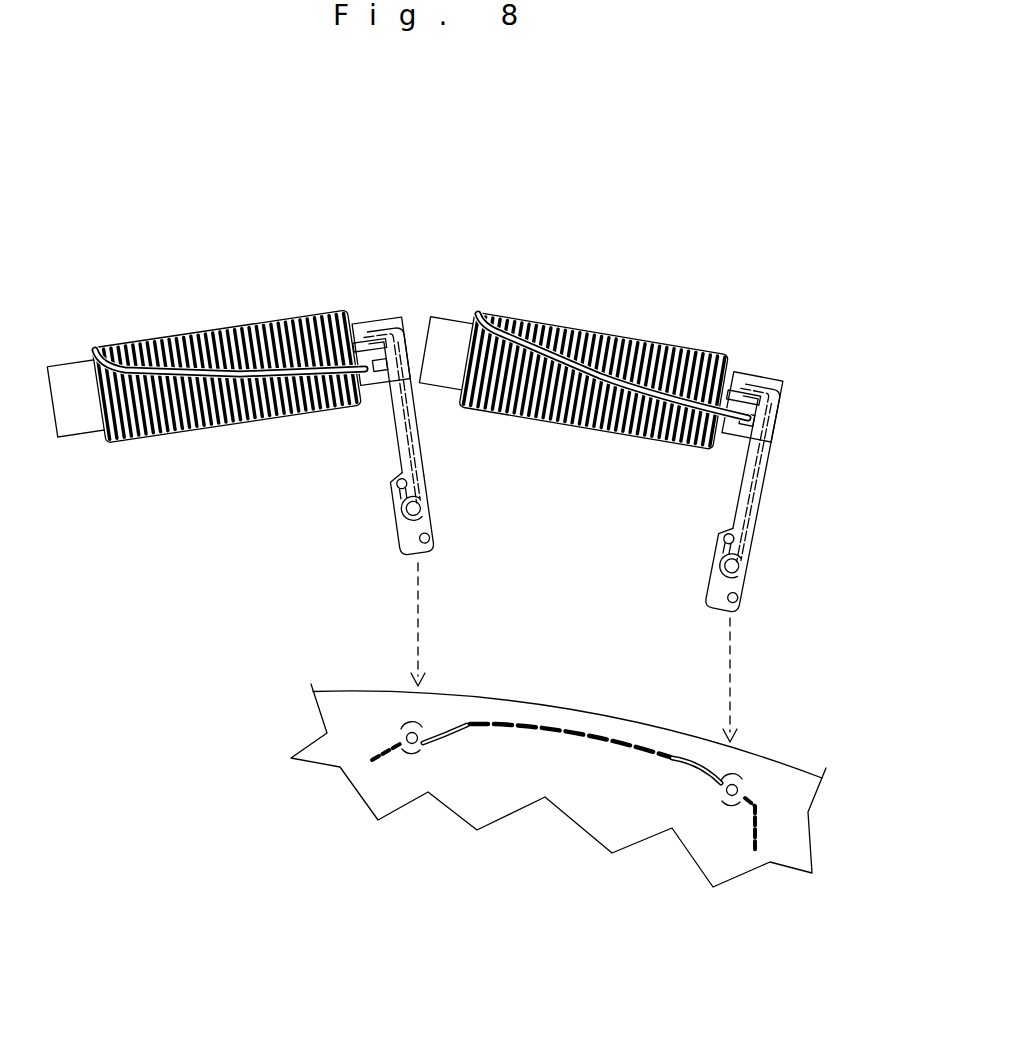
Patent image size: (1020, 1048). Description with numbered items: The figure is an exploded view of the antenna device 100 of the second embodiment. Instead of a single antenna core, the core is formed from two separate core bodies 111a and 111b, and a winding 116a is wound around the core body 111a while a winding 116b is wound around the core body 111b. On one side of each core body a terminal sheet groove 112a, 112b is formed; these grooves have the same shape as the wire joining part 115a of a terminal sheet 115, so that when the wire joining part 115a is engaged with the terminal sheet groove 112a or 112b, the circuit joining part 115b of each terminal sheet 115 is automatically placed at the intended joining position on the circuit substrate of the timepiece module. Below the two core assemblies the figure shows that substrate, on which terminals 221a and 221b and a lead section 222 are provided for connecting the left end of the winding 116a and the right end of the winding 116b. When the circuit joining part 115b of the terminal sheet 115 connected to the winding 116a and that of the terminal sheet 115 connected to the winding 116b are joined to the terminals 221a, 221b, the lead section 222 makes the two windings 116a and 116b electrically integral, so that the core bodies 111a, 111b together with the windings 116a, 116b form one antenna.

The coil unit 100 is at (530, 243).
The core body 111a is at (748, 372).
The core body 111b is at (78, 425).
The terminal sheet groove 112a is at (767, 378).
The terminal sheet groove 112b is at (378, 312).
The terminal sheet 115 is at (432, 474).
The wire joining part 115a is at (380, 388).
The circuit joining part 115b is at (437, 530).
The winding 116a is at (532, 318).
The winding 116b is at (216, 330).
The terminal 221a is at (736, 778).
The terminal 221b is at (418, 750).
The lead section 222 is at (547, 740).